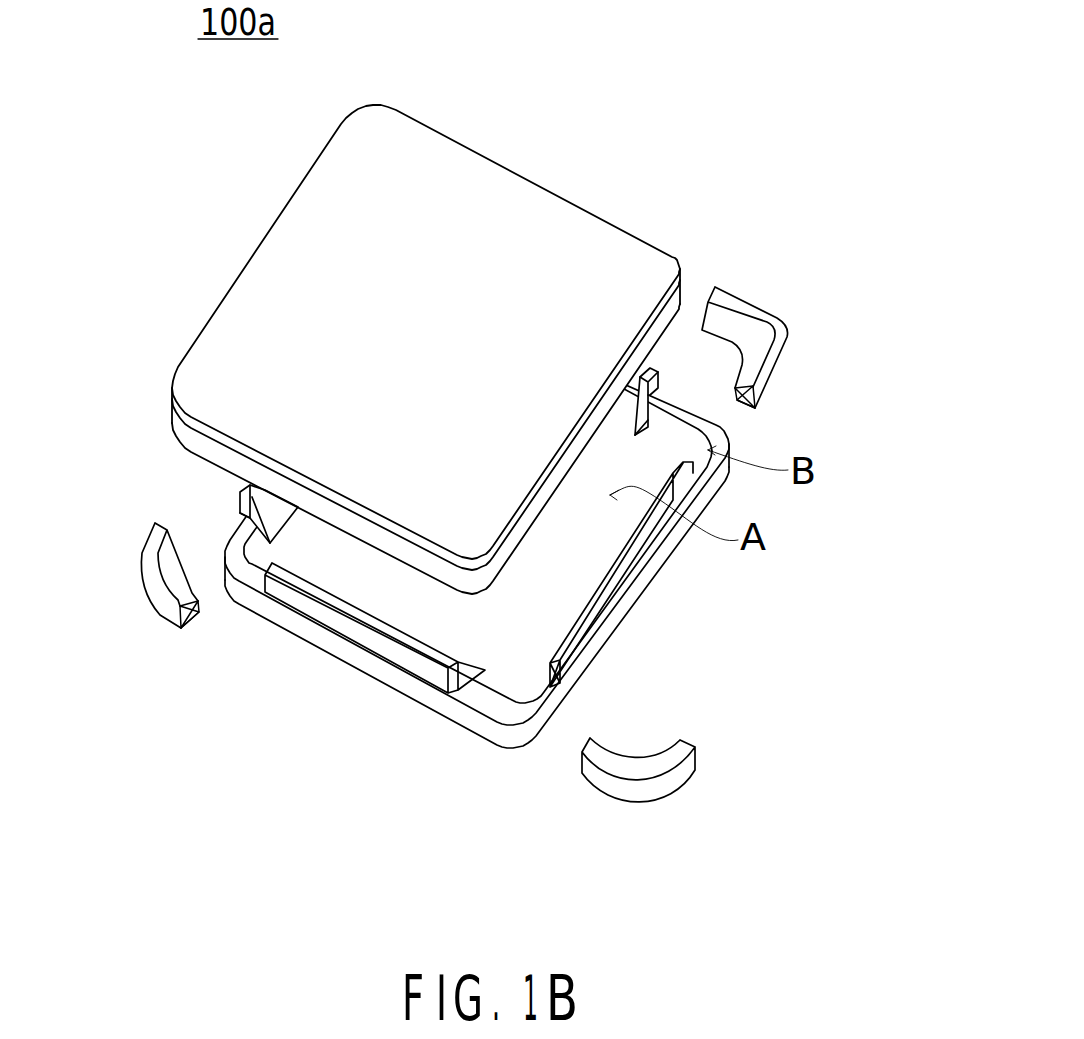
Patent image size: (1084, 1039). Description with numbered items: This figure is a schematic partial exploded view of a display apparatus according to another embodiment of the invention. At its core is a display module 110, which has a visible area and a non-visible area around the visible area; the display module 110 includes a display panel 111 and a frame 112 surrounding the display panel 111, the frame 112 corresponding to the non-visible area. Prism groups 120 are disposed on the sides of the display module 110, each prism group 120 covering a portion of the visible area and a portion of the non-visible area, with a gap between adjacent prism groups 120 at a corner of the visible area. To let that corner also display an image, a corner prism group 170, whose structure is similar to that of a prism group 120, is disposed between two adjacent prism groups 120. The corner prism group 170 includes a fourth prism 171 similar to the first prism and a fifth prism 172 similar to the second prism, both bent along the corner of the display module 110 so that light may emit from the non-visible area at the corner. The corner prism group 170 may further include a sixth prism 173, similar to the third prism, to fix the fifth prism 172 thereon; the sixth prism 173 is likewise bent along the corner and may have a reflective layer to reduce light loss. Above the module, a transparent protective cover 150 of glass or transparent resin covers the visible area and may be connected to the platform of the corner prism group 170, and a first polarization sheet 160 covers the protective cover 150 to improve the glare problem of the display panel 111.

The display module 110 is at (477, 593).
The display panel 111 is at (515, 693).
The frame 112 is at (478, 723).
The prism group 120 is at (380, 640).
The protective cover 150 is at (478, 349).
The first polarization sheet 160 is at (681, 265).
The corner prism group 170 is at (858, 338).
The fourth prism 171 is at (754, 388).
The fifth prism 172 is at (748, 396).
The sixth prism 173 is at (745, 406).